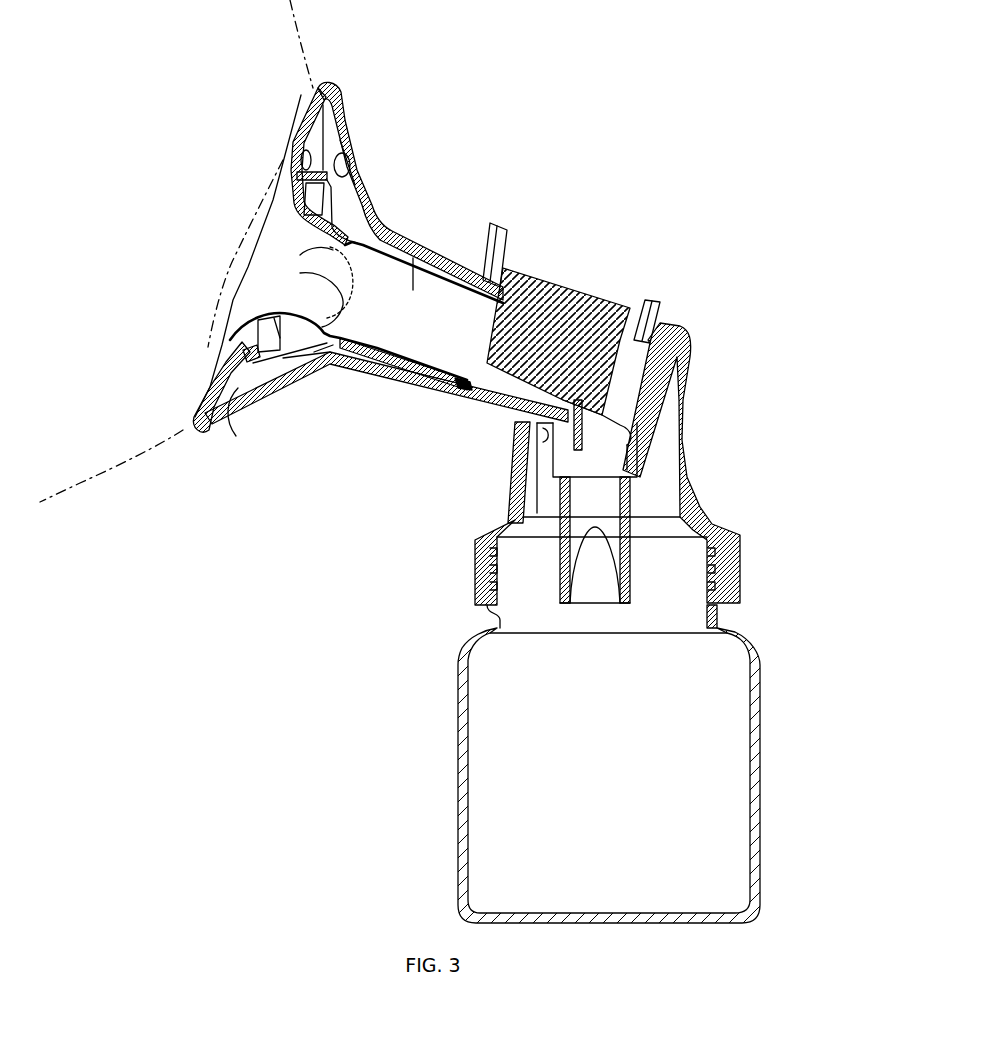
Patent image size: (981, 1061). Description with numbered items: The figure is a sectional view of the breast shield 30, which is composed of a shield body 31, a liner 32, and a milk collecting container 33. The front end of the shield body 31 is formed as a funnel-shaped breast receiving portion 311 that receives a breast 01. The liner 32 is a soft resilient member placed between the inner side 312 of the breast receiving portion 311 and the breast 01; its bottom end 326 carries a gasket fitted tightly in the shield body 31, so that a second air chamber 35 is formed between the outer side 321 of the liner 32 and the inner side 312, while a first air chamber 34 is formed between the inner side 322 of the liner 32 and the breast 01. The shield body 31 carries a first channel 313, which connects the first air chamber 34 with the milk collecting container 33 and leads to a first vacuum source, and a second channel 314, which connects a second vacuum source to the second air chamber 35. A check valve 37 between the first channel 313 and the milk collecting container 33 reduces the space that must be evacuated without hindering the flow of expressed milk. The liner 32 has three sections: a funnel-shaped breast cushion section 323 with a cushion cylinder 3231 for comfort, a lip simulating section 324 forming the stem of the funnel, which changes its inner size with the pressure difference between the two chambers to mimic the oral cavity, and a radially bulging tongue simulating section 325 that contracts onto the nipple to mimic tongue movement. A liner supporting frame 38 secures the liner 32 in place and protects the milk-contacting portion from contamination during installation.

The breast 01 is at (73, 478).
The breast shield 30 is at (737, 477).
The shield body 31 is at (513, 427).
The breast receiving portion 311 is at (365, 168).
The inner side of the breast receiving portion 312 is at (347, 142).
The first channel 313 is at (657, 298).
The second channel 314 is at (503, 223).
The liner 32 is at (257, 245).
The outer side of the liner 321 is at (314, 352).
The inner side of the liner 322 is at (300, 273).
The breast cushion section 323 is at (222, 372).
The cushion cylinder 3231 is at (297, 140).
The lip simulating section 324 is at (327, 253).
The tongue simulating section 325 is at (380, 343).
The bottom end of the liner 326 is at (507, 277).
The milk collecting container 33 is at (494, 782).
The first air chamber 34 is at (413, 258).
The second air chamber 35 is at (283, 358).
The check valve 37 is at (570, 558).
The liner supporting frame 38 is at (243, 425).